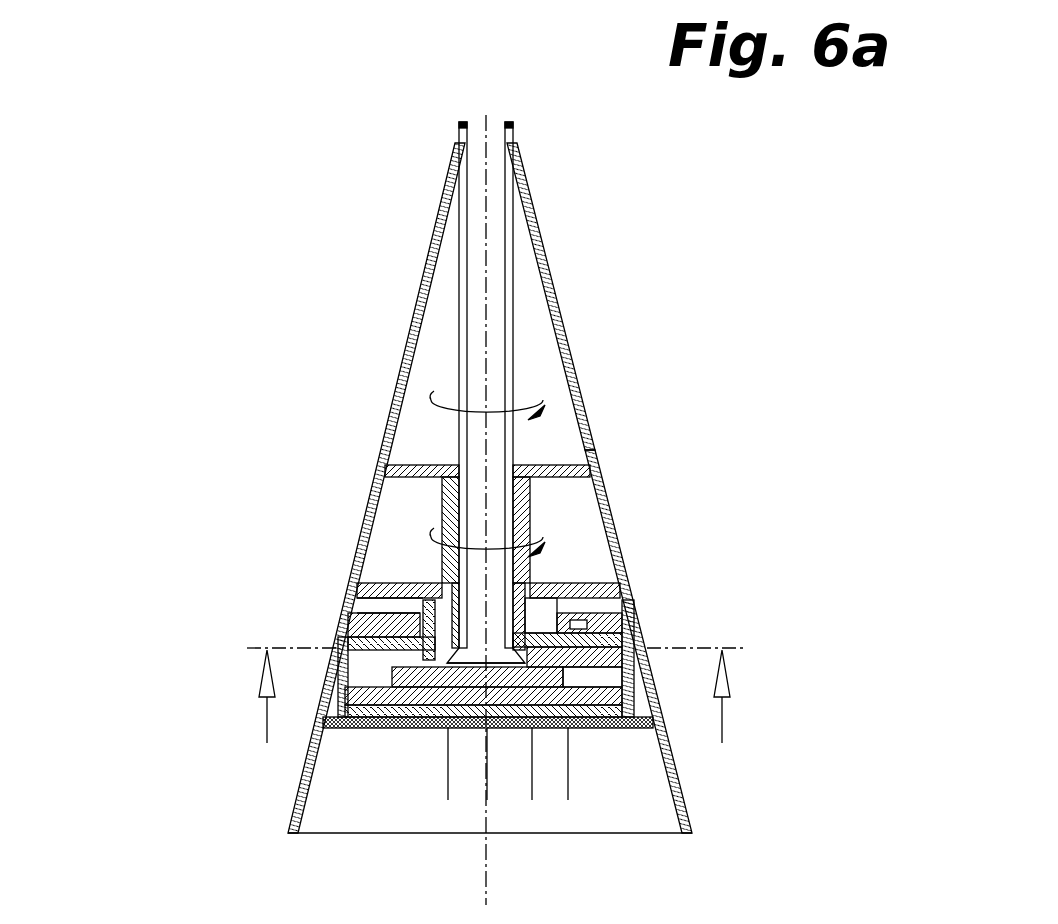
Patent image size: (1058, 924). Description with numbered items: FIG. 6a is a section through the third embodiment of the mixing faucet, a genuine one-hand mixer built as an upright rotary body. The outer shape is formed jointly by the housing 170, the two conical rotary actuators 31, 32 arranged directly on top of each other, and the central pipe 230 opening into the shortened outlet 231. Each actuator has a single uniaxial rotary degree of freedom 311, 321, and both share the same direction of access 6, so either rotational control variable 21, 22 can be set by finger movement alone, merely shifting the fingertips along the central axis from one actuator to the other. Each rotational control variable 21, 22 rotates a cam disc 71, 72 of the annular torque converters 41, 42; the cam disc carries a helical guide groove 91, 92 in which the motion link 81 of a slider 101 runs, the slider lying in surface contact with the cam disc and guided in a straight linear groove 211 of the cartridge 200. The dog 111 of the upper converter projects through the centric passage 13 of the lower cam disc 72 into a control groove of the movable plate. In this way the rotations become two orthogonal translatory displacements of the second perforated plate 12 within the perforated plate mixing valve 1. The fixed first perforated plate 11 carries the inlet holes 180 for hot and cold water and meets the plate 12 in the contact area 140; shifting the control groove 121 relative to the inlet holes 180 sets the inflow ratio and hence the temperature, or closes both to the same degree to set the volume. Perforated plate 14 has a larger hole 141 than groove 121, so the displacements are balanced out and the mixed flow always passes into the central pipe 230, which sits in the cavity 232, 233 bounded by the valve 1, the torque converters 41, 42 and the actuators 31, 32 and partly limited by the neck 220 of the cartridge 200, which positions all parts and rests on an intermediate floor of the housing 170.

The perforated plate mixing valve 1 is at (680, 738).
The direction of access 6 is at (553, 193).
The first perforated plate 11 is at (370, 727).
The second perforated plate 12 is at (575, 727).
The passage 13 is at (247, 648).
The perforated plate 14 is at (647, 633).
The rotational control variable 21 is at (306, 269).
The uniaxial rotary degree of freedom 311 is at (440, 400).
The rotational control variable 22 is at (306, 380).
The uniaxial rotary degree of freedom 321 is at (437, 537).
The conical rotary actuator 31 is at (578, 400).
The conical rotary actuator 32 is at (605, 493).
The annular torque converter 41 is at (427, 582).
The annular torque converter 42 is at (593, 612).
The cam disc 71 is at (412, 535).
The cam disc 72 is at (645, 628).
The motion link 81 is at (329, 404).
The helical guide groove 91 is at (372, 525).
The helical guide groove 92 is at (642, 618).
The slider 101 is at (348, 598).
The dog 111 is at (337, 657).
The control groove 121 is at (327, 720).
The contact area 140 is at (290, 703).
The hole 141 is at (447, 728).
The housing 170 is at (637, 688).
The inlet hole 180 is at (510, 793).
The cartridge 200 is at (337, 637).
The straight linear groove 211 is at (445, 603).
The neck 220 is at (540, 492).
The central pipe 230 is at (462, 383).
The outlet 231 is at (460, 126).
The cavity 232 is at (604, 534).
The spray ring 233 is at (595, 565).